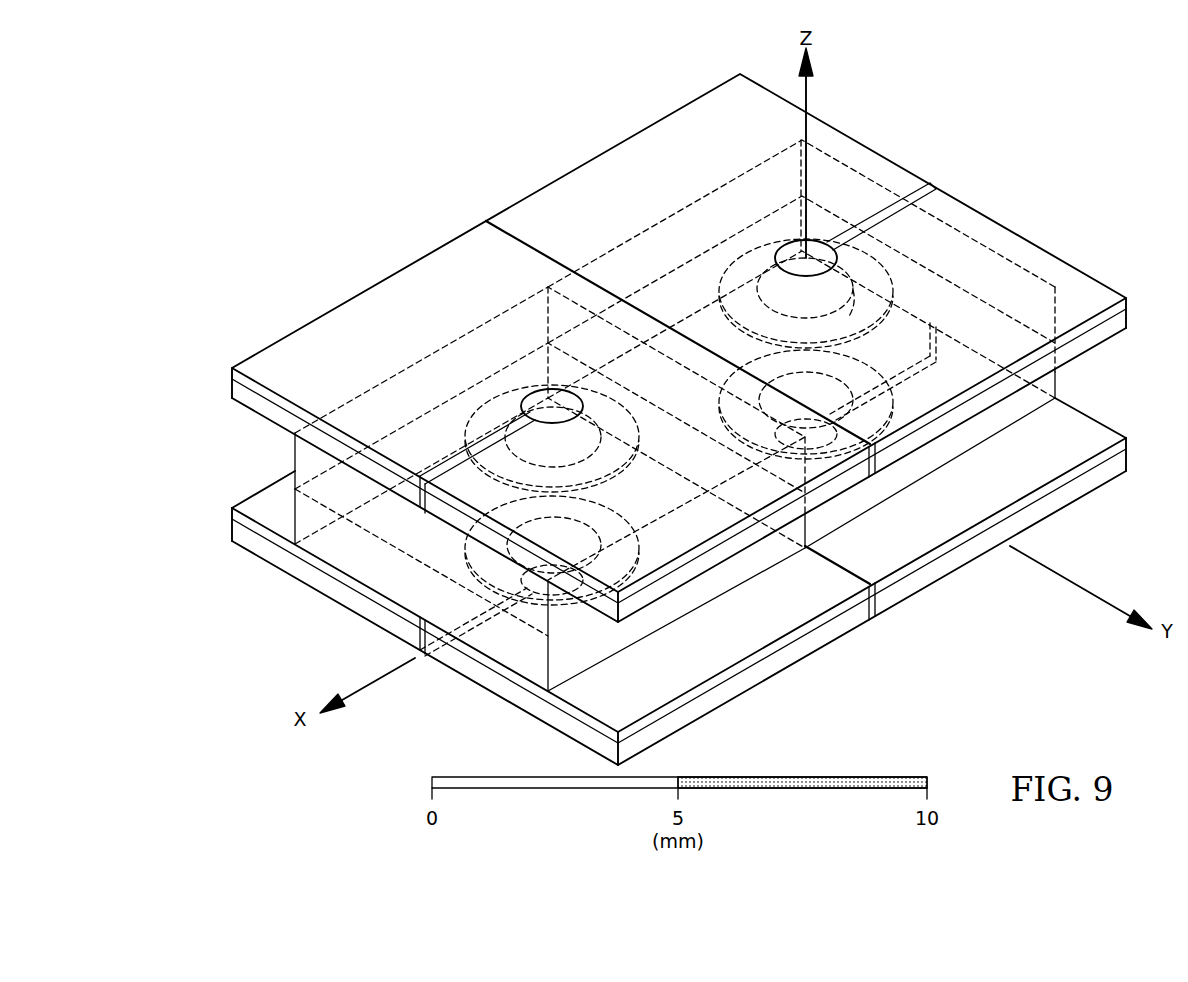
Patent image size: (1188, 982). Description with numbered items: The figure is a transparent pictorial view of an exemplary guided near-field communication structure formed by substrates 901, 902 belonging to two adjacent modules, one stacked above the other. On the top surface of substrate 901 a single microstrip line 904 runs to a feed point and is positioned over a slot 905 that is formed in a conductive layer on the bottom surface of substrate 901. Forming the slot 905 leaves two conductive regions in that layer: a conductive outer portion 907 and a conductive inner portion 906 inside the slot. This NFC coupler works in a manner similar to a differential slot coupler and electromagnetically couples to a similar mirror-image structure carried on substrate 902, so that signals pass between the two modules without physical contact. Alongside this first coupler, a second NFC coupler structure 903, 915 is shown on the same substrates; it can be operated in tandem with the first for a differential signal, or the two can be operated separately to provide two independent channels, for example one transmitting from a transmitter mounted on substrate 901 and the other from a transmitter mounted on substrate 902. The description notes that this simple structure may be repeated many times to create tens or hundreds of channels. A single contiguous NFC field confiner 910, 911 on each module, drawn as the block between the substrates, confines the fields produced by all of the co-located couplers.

The substrate 901 is at (234, 392).
The substrate 902 is at (234, 518).
The second NFC coupler structure 903 is at (450, 467).
The microstrip line 904 is at (908, 190).
The slot 905 is at (763, 244).
The conductive inner portion 906 is at (862, 325).
The conductive outer portion 907 is at (632, 150).
The NFC field confiner 910 is at (292, 461).
The NFC field confiner 911 is at (334, 552).
The second NFC coupler structure 915 is at (616, 401).